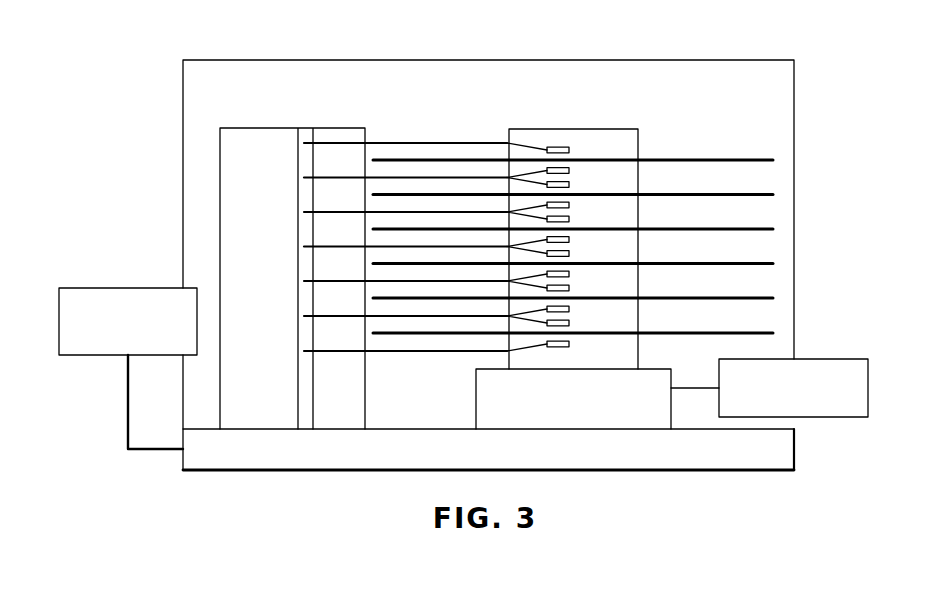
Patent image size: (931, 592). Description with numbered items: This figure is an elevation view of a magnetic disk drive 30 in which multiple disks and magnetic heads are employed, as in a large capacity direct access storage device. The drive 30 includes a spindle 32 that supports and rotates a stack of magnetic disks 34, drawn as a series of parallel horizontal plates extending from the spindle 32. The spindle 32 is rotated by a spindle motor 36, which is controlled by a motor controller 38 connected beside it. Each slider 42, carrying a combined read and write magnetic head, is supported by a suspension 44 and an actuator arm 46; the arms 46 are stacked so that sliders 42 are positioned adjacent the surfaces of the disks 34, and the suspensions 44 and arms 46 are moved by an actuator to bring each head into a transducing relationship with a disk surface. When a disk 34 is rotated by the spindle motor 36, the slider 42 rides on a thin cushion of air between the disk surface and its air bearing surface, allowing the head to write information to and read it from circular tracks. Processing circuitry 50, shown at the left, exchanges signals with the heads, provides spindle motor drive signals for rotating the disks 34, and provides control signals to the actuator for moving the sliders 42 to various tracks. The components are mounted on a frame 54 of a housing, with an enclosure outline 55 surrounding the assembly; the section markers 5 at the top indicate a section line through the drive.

The section line 5- 5 is at (274, 12).
The magnetic disk drive 30 is at (687, 131).
The spindle 32 is at (626, 128).
The magnetic disk 34 is at (773, 160).
The spindle motor 36 is at (564, 410).
The motor controller 38 is at (828, 418).
The slider 42 is at (570, 170).
The suspension 44 is at (540, 177).
The actuator arm 46 is at (478, 178).
The processing circuitry 50 is at (100, 287).
The frame 54 is at (237, 470).
The enclosure 55 is at (736, 60).